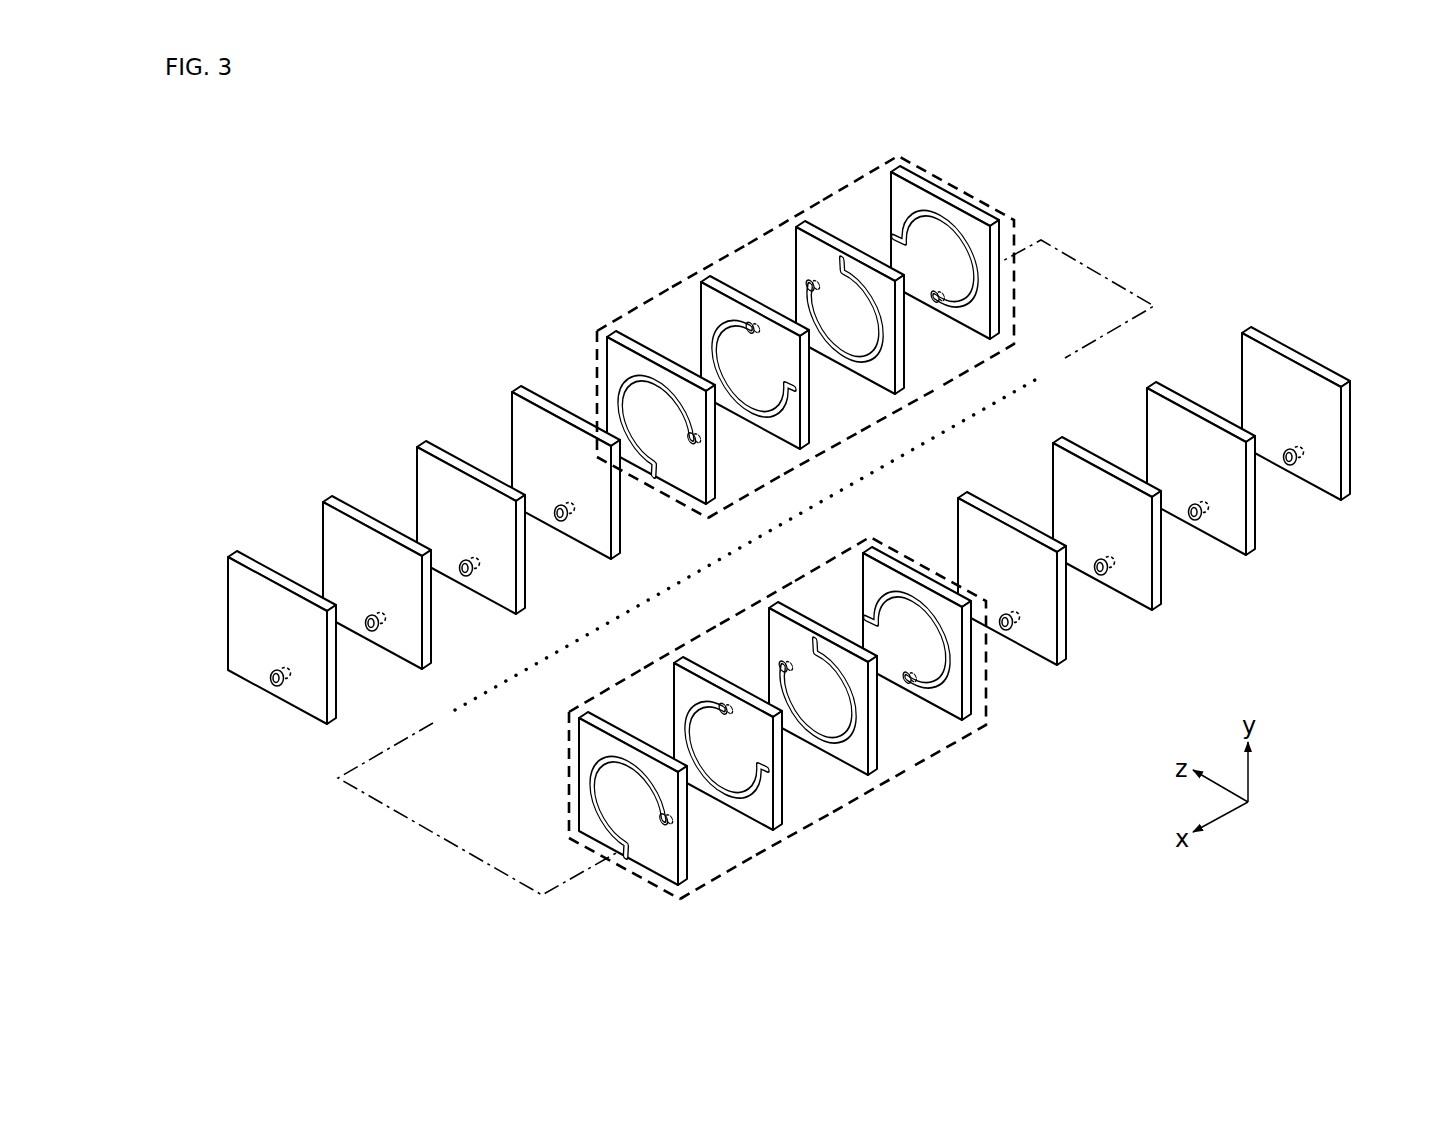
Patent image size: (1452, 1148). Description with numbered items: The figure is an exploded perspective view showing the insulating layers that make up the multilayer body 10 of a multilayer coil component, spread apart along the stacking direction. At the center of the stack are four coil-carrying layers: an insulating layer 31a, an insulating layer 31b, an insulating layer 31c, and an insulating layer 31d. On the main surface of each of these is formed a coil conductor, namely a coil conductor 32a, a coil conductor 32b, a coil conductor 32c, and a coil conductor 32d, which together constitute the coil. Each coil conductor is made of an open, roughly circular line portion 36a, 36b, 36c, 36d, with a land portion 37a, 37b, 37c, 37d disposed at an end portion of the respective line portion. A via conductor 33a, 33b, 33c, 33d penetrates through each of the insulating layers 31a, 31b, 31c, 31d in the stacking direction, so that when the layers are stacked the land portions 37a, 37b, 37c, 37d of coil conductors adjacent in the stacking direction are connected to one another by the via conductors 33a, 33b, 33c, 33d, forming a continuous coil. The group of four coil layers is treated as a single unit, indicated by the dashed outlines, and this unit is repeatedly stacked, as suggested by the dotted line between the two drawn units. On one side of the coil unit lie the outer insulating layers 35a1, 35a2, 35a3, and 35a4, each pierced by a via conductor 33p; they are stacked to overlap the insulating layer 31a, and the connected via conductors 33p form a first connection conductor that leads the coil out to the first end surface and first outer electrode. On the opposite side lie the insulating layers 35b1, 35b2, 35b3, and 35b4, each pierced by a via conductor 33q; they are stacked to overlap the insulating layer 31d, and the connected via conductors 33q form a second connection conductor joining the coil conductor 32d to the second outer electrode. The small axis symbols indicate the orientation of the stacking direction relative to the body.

The multilayer body 10 is at (410, 327).
The insulating layer 31a is at (624, 340).
The insulating layer 31b is at (718, 285).
The insulating layer 31c is at (813, 230).
The insulating layer 31d is at (908, 175).
The coil conductor 32a is at (599, 355).
The coil conductor 32b is at (693, 300).
The coil conductor 32c is at (788, 245).
The coil conductor 32d is at (883, 190).
The via conductor 33a is at (692, 437).
The via conductor 33b is at (750, 328).
The via conductor 33c is at (810, 285).
The via conductor 33d is at (935, 304).
The via conductors 33p is at (290, 683).
The via conductors 33q is at (1299, 465).
The insulating layer 35a1 is at (247, 562).
The insulating layer 35a2 is at (342, 507).
The insulating layer 35a3 is at (436, 452).
The insulating layer 35a4 is at (531, 397).
The insulating layer 35b1 is at (1342, 499).
The insulating layer 35b2 is at (1247, 554).
The insulating layer 35b3 is at (1153, 609).
The insulating layer 35b4 is at (1058, 664).
The line portion 36a is at (629, 378).
The line portion 36b is at (723, 323).
The line portion 36c is at (818, 268).
The line portion 36d is at (913, 213).
The land portion 37a is at (690, 443).
The land portion 37b is at (793, 390).
The land portion 37c is at (850, 339).
The land portion 37d is at (895, 237).